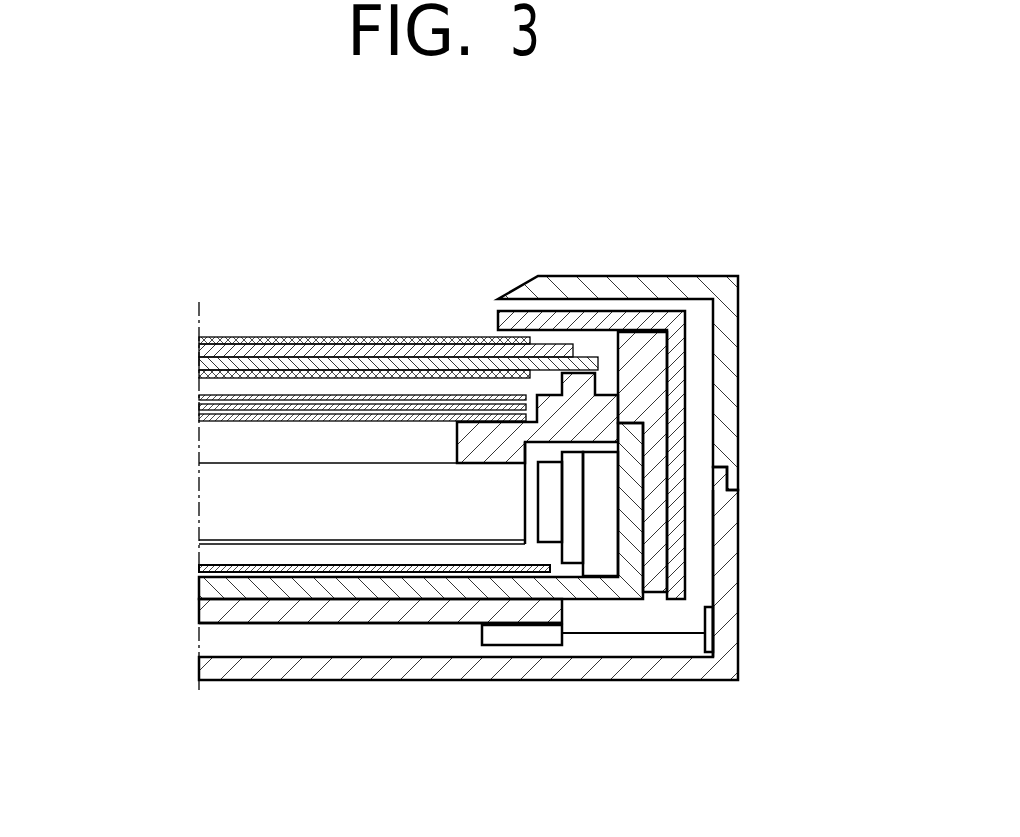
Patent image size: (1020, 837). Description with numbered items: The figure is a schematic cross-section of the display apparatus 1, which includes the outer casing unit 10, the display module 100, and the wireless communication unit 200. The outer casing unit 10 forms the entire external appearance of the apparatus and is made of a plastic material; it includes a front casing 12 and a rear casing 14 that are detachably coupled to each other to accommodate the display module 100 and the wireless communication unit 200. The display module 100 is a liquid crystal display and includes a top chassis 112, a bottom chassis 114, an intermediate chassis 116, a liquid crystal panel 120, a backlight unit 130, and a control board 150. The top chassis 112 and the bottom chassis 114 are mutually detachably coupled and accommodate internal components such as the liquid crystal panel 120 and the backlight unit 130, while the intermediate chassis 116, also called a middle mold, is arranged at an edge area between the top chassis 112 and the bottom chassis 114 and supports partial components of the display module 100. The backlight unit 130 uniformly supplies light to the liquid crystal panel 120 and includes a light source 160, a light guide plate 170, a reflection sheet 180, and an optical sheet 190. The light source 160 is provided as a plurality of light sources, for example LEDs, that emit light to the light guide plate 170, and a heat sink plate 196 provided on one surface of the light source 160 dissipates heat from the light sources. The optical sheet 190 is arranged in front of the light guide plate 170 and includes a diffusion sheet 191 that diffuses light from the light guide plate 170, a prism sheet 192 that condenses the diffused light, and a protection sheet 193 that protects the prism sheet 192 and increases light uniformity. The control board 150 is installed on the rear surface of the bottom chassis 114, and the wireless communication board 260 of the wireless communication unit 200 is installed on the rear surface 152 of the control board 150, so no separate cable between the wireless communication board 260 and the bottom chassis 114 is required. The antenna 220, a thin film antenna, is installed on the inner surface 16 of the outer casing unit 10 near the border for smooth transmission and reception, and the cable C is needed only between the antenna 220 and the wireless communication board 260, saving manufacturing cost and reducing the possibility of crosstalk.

The display apparatus 1 is at (460, 163).
The outer casing unit 10 is at (807, 437).
The front casing 12 is at (728, 418).
The rear casing 14 is at (728, 522).
The inner surface 16 is at (716, 557).
The display module 100 is at (328, 312).
The top chassis 112 is at (497, 313).
The bottom chassis 114 is at (255, 587).
The intermediate chassis 116 is at (643, 340).
The liquid crystal panel 120 is at (185, 350).
The backlight unit 130 is at (92, 387).
The control board 150 is at (308, 612).
The rear surface 152 is at (380, 624).
The light source 160 is at (543, 497).
The light guide plate 170 is at (213, 520).
The reflection sheet 180 is at (212, 566).
The optical sheet 190 is at (148, 428).
The diffusion sheet 191 is at (210, 418).
The prism sheet 192 is at (207, 407).
The protection sheet 193 is at (210, 396).
The heat sink plate 196 is at (598, 467).
The wireless communication unit 200 is at (675, 735).
The antenna 220 is at (708, 642).
The wireless communication board 260 is at (527, 636).
The cable C is at (613, 635).